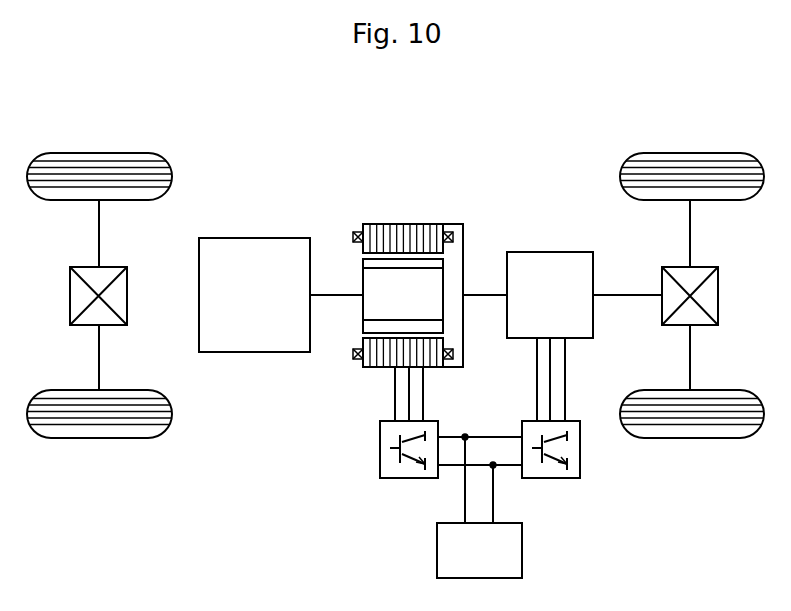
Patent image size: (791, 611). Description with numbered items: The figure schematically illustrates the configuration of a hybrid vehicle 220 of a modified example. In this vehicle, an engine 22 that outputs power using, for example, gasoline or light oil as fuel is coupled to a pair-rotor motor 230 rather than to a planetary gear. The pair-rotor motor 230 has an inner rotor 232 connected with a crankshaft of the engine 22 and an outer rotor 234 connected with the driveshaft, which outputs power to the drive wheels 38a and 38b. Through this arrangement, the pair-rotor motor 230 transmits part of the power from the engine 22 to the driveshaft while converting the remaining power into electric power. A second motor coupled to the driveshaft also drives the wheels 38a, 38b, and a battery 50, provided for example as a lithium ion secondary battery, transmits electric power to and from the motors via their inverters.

The hybrid vehicle 220 is at (508, 112).
The engine 22 is at (253, 238).
The pair-rotor motor 230 is at (437, 168).
The inner rotor 232 is at (363, 282).
The outer rotor 234 is at (412, 224).
The battery 50 is at (522, 550).
The drive wheel 38a is at (690, 152).
The drive wheel 38b is at (689, 440).